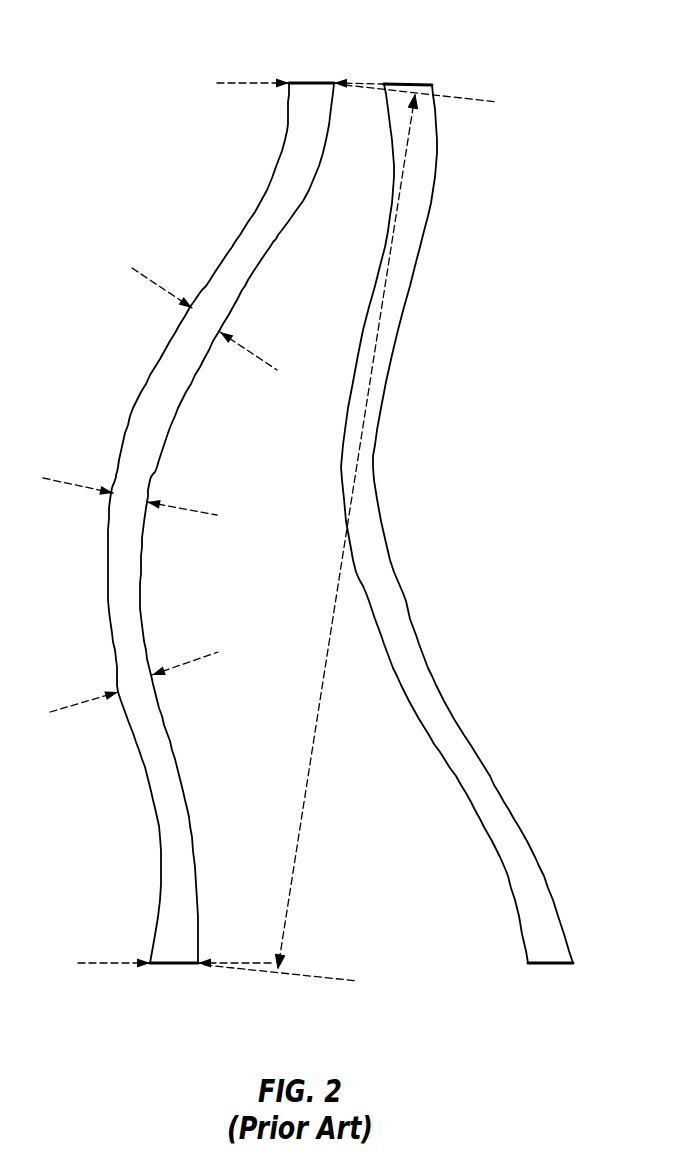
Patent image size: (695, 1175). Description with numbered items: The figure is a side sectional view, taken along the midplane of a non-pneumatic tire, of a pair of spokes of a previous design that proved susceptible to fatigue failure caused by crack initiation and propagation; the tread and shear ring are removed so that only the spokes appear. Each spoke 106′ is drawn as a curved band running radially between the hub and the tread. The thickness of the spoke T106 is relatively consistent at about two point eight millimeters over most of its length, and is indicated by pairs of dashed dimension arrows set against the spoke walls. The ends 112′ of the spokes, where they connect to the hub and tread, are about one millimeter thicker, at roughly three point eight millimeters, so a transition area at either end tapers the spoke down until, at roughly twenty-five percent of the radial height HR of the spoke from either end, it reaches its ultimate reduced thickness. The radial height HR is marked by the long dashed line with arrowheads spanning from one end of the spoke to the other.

The spoke 106′ is at (274, 211).
The end of spoke 112′ is at (313, 83).
The thickness of the spoke T106 is at (98, 963).
The radial height of the spoke HR is at (332, 603).